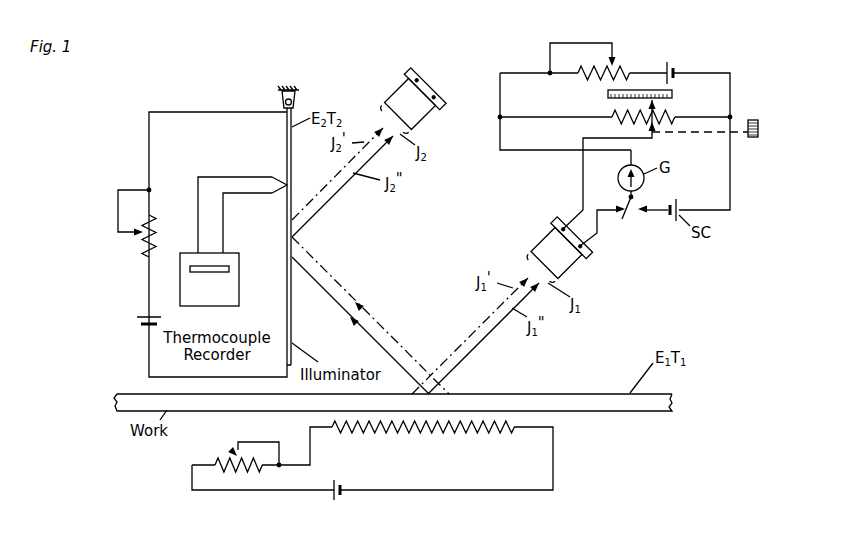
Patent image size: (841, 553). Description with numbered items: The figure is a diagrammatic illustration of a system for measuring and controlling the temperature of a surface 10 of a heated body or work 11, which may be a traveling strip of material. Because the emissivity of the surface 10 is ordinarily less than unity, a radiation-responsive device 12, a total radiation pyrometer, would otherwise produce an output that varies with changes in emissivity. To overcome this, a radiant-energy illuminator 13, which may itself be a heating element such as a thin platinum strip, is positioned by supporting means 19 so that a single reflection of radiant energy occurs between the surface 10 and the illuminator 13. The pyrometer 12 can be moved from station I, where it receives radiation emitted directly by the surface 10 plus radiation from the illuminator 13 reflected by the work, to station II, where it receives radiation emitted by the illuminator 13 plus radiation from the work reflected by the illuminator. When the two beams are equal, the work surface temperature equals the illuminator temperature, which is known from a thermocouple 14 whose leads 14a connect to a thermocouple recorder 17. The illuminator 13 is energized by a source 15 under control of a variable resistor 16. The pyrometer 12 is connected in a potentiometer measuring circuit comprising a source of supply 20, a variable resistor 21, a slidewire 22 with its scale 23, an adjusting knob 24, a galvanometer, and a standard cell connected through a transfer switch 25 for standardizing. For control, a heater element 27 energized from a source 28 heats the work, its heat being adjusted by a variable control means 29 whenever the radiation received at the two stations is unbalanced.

The surface 10 is at (540, 394).
The work 11 is at (583, 403).
The radiation-responsive device 12 is at (424, 75).
The radiant-energy illuminator 13 is at (292, 172).
The thermocouple 14 is at (283, 190).
The leads 14a is at (231, 176).
The source 15 is at (137, 320).
The variable resistor 16 is at (145, 247).
The thermocouple recorder 17 is at (220, 297).
The supporting means 19 is at (299, 97).
The source of supply 20 is at (674, 62).
The variable resistor 21 is at (598, 77).
The slidewire 22 is at (618, 118).
The scale 23 is at (672, 93).
The adjusting knob 24 is at (755, 138).
The transfer switch 25 is at (628, 220).
The heater element 27 is at (423, 428).
The source 28 is at (337, 500).
The variable control means 29 is at (231, 450).